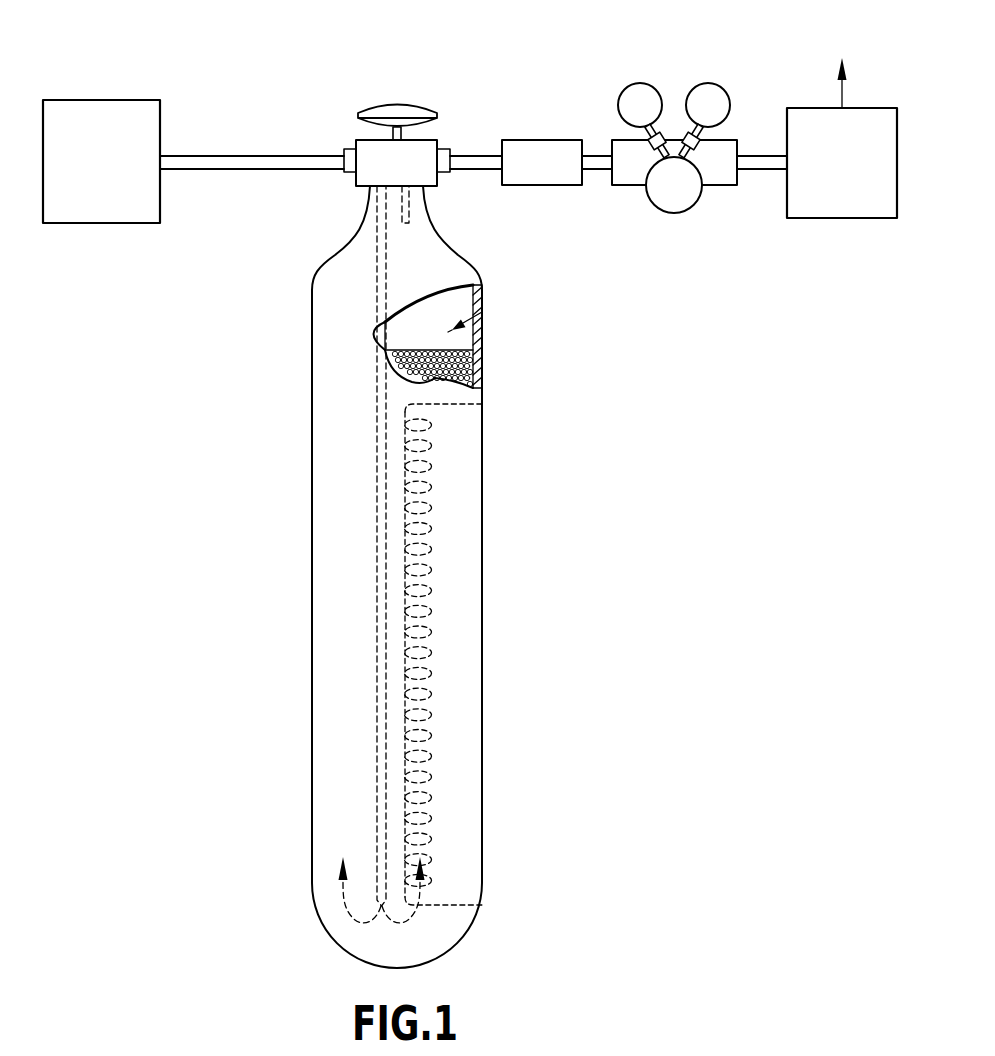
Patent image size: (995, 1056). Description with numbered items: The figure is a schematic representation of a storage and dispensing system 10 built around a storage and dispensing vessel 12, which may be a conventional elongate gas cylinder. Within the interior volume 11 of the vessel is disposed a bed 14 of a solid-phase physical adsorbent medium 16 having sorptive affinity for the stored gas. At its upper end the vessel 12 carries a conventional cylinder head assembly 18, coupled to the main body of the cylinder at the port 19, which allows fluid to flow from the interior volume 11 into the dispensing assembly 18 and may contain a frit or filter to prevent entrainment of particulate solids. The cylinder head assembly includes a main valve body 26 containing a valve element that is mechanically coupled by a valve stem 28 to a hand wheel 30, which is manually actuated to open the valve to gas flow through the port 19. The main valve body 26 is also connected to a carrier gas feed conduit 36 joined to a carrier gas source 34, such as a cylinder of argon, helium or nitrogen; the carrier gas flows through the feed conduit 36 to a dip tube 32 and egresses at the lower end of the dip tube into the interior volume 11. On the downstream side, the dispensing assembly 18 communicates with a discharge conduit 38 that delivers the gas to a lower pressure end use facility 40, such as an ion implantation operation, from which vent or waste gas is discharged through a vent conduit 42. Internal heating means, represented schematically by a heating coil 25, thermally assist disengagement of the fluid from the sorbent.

The storage and dispensing system 10 is at (306, 62).
The interior volume 11 is at (460, 298).
The storage and dispensing vessel 12 is at (312, 545).
The bed 14 is at (482, 312).
The solid-phase physical adsorbent medium 16 is at (472, 365).
The cylinder head assembly 18 is at (738, 60).
The port 19 is at (406, 226).
The heating coil 25 is at (482, 404).
The main valve body 26 is at (425, 146).
The valve stem 28 is at (393, 133).
The hand wheel 30 is at (407, 107).
The dip tube 32 is at (383, 340).
The carrier gas source 34 is at (112, 105).
The carrier gas feed conduit 36 is at (207, 170).
The discharge conduit 38 is at (767, 172).
The end use facility 40 is at (833, 218).
The vent conduit 42 is at (845, 97).